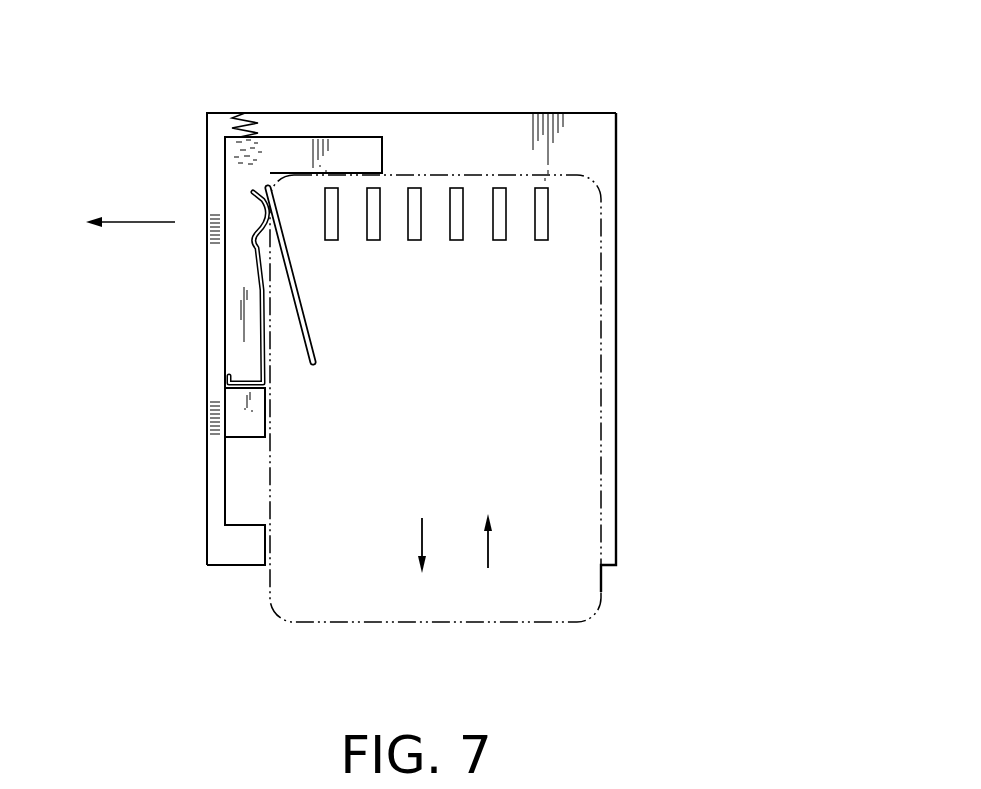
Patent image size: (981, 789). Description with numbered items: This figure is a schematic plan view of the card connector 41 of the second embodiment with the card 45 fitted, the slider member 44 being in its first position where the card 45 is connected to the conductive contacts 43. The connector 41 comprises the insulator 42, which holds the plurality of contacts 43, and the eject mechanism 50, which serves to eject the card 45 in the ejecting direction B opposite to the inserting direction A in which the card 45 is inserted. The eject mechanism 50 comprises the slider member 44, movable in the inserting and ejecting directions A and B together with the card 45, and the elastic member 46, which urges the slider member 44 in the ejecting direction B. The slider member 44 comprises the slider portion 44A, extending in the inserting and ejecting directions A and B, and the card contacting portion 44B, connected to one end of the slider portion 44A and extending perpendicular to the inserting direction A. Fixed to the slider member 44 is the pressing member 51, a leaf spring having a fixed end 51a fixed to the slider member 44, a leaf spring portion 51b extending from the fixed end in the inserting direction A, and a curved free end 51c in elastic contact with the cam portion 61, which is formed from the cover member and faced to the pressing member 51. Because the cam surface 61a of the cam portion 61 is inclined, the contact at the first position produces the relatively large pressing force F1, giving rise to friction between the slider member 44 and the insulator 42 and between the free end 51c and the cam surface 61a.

The card connector 41 is at (434, 296).
The insulator 42 is at (562, 113).
The conductive contacts 43 is at (457, 193).
The slider member 44 is at (252, 301).
The slider portion 44A is at (233, 352).
The card contacting portion 44B is at (348, 150).
The card 45 is at (513, 624).
The elastic member 46 is at (237, 113).
The eject mechanism 50 is at (149, 43).
The pressing member 51 is at (194, 295).
The fixed end 51a is at (222, 372).
The leaf spring portion 51b is at (255, 305).
The free end 51c is at (256, 204).
The cam portion 61 is at (319, 308).
The cam surface 61a is at (301, 328).
The pressing force F1 is at (115, 224).
The inserting direction A is at (490, 540).
The ejecting direction B is at (420, 542).